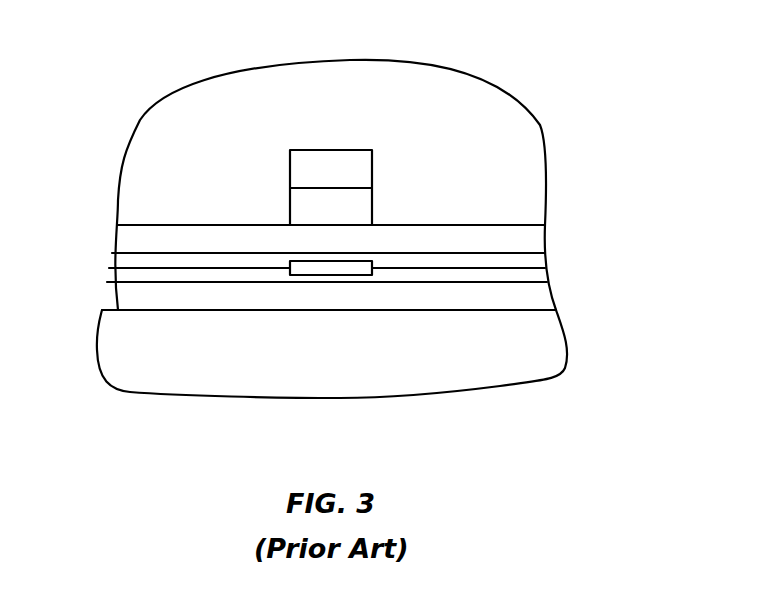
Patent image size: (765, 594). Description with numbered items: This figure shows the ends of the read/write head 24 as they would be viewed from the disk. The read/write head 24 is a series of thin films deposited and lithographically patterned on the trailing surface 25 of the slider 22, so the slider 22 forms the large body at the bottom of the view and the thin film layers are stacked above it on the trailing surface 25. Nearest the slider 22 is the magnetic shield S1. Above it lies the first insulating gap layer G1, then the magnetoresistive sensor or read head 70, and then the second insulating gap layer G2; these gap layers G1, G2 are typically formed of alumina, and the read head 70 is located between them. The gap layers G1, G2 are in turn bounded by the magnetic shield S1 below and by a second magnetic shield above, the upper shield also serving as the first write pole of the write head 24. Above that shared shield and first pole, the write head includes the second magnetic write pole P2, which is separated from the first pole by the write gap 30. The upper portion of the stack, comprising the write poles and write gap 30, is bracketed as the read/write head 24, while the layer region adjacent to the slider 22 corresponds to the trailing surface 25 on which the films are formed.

The slider 22 is at (138, 387).
The read/write head 24 is at (100, 152).
The trailing surface 25 is at (110, 308).
The write gap 30 is at (363, 210).
The magnetoresistive sensor 70 is at (358, 270).
The write pole P2 is at (363, 170).
The insulating gap layer G2 is at (533, 258).
The insulating gap layer G1 is at (540, 277).
The magnetic shield S1 is at (183, 303).